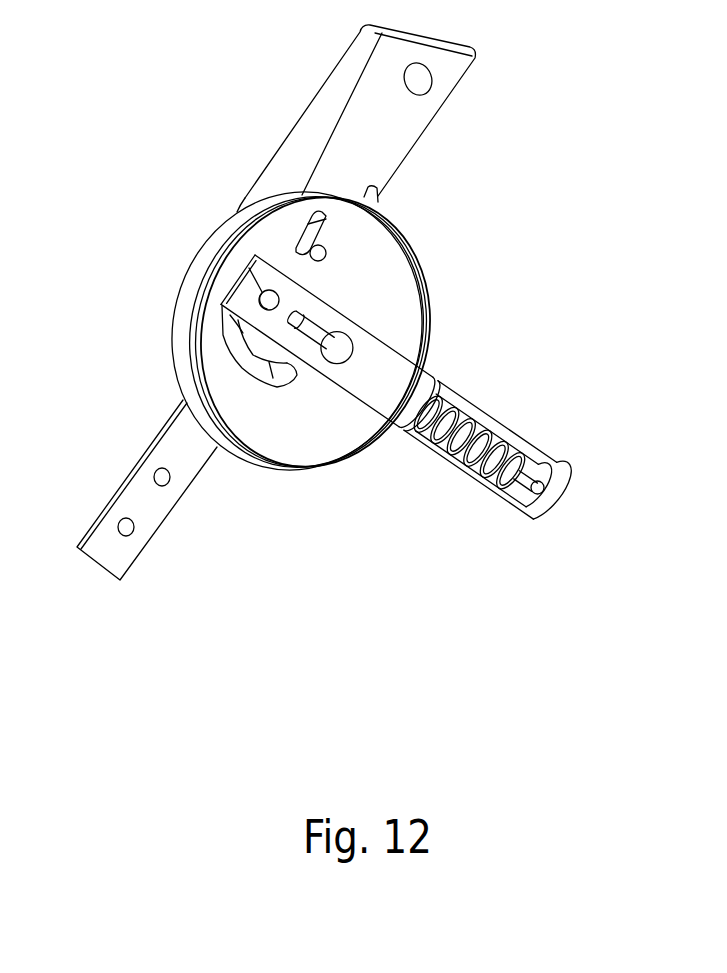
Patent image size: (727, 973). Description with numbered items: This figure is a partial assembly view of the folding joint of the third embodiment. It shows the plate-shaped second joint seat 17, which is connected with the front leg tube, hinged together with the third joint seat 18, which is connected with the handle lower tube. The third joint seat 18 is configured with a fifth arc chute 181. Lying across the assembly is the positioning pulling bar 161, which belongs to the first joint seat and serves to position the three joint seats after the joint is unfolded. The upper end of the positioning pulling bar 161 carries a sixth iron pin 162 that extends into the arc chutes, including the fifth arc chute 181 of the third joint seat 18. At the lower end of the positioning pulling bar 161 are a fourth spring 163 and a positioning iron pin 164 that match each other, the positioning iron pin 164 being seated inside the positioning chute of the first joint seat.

The second joint seat 17 is at (140, 460).
The third joint seat 18 is at (383, 262).
The fifth arc chute 181 is at (227, 353).
The positioning pulling bar 161 is at (382, 376).
The sixth iron pin 162 is at (245, 262).
The fourth spring 163 is at (490, 437).
The positioning iron pin 164 is at (543, 480).